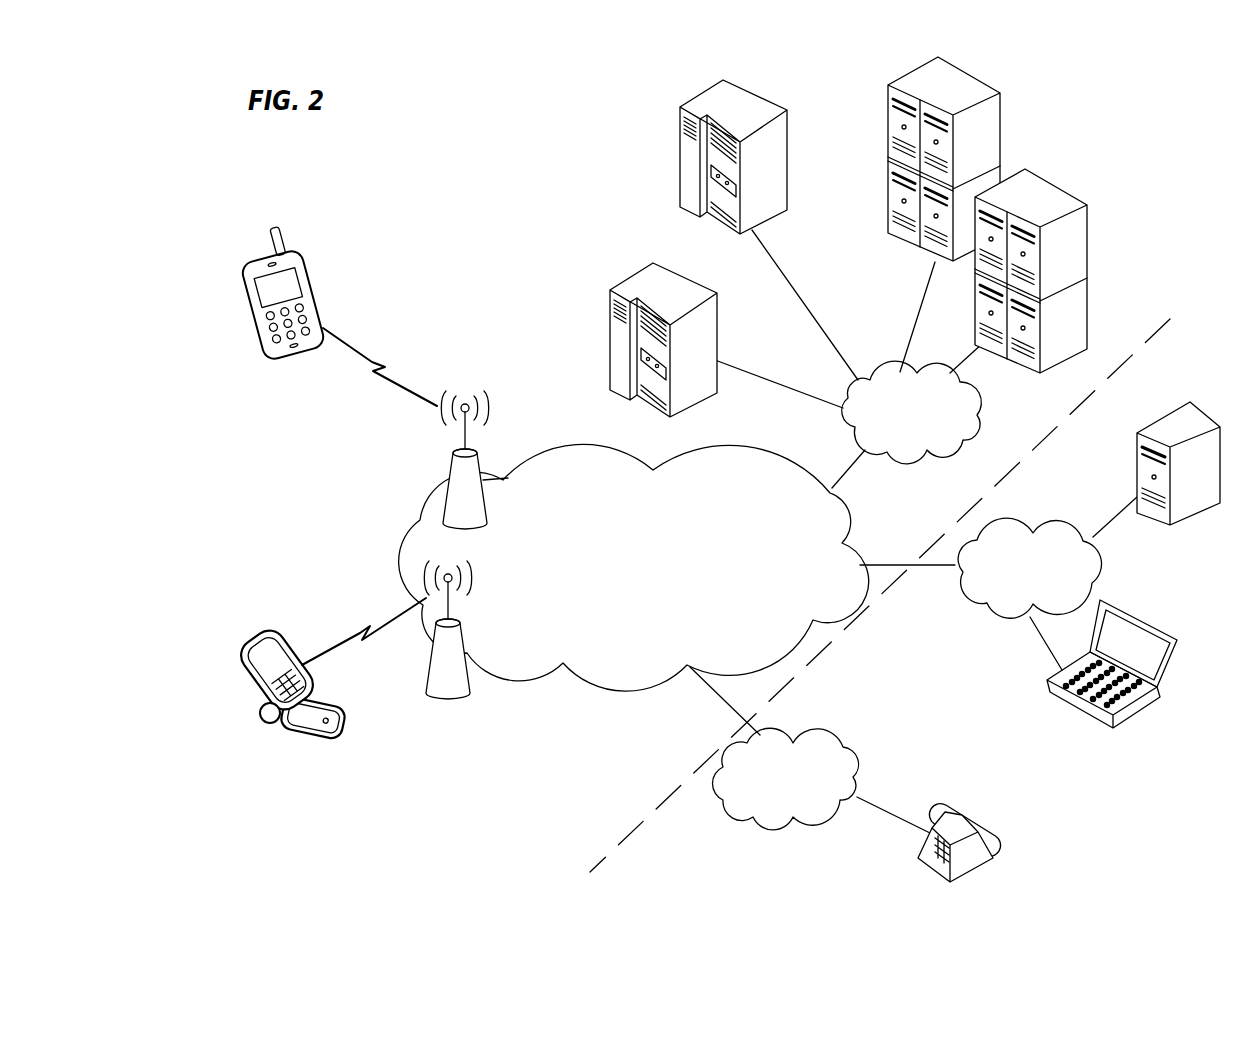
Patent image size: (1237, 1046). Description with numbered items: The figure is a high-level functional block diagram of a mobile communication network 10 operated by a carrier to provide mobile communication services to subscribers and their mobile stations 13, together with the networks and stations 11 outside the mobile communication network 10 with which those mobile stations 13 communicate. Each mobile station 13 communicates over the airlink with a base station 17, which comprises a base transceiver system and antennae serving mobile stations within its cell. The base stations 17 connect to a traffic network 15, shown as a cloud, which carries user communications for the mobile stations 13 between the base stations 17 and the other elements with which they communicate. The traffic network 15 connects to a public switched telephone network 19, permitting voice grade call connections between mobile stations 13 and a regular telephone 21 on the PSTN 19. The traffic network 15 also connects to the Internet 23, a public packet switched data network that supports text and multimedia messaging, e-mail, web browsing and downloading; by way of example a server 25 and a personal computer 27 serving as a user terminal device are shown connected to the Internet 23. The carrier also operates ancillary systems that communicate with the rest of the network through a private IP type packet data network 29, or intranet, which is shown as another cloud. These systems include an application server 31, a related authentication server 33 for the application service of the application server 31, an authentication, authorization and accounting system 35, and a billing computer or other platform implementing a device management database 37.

The mobile communication network 10 is at (519, 447).
The networks and stations outside the mobile communication network 11 is at (880, 595).
The mobile station 13 is at (248, 278).
The traffic network 15 is at (545, 450).
The base station 17 is at (446, 470).
The public switched telephone network 19 is at (863, 765).
The telephone 21 is at (918, 868).
The Internet 23 is at (983, 612).
The server 25 is at (1135, 478).
The personal computer 27 is at (1076, 712).
The private IP type packet data network 29 is at (990, 427).
The application server 31 is at (1000, 95).
The authentication server 33 is at (1085, 235).
The authentication, authorization and accounting system 35 is at (608, 340).
The device management database 37 is at (680, 155).